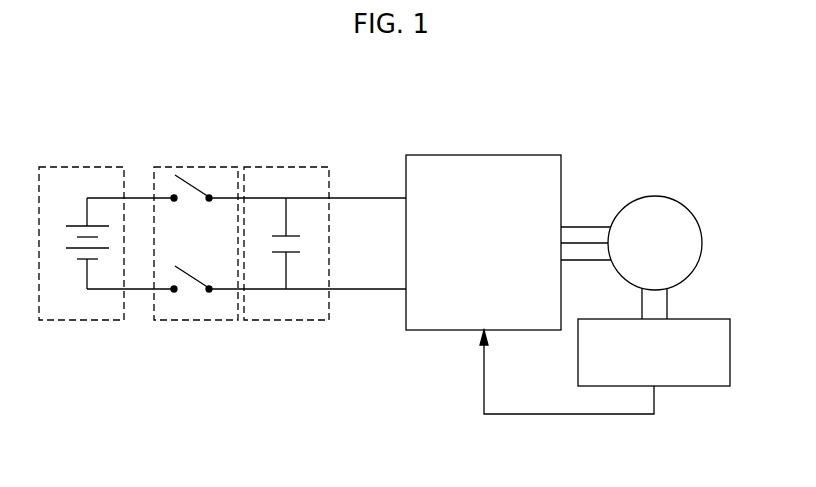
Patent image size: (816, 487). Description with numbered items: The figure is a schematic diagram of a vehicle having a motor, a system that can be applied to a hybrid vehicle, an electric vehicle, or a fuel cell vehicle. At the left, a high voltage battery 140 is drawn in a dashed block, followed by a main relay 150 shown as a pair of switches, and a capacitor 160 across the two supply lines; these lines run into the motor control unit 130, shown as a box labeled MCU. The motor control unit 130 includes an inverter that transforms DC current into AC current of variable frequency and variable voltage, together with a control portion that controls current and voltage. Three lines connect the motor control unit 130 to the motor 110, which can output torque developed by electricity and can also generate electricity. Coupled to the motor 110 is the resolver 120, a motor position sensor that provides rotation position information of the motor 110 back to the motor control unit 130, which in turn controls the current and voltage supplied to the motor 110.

The motor 110 is at (653, 197).
The resolver 120 is at (712, 319).
The motor control unit 130 is at (481, 155).
The high voltage battery 140 is at (81, 165).
The main relay 150 is at (197, 165).
The capacitor 160 is at (286, 165).